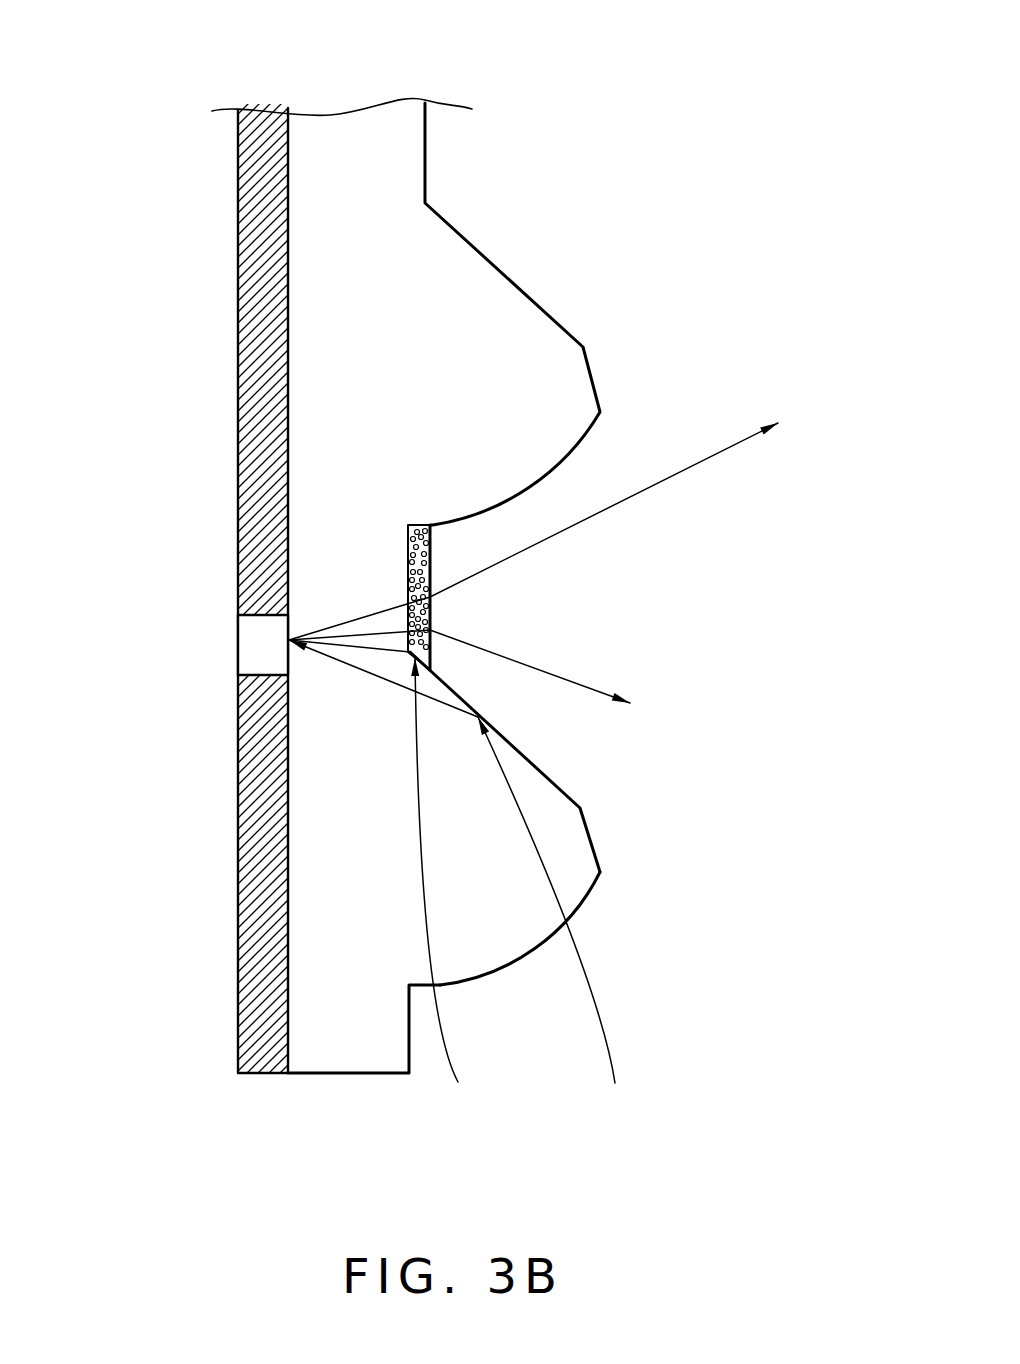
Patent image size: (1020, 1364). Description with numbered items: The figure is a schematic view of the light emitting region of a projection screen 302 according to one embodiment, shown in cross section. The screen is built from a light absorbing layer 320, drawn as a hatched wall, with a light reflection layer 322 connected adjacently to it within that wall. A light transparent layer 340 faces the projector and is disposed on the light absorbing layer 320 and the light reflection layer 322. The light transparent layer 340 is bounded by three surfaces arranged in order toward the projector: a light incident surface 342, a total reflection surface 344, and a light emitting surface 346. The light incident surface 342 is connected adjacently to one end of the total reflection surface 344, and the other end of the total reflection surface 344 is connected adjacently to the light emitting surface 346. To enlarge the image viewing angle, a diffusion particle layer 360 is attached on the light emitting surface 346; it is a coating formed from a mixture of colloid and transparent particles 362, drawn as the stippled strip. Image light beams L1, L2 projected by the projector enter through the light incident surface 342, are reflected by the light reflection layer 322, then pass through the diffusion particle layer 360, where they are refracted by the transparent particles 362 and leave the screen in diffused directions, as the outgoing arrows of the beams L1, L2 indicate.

The projection screen 302 is at (173, 68).
The light absorbing layer 320 is at (253, 1073).
The light reflection layer 322 is at (247, 647).
The light transparent layer 340 is at (365, 1073).
The light incident surface 342 is at (582, 903).
The total reflection surface 344 is at (555, 780).
The light emitting surface 346 is at (410, 563).
The diffusion particle layer 360 is at (433, 565).
The transparent particles 362 is at (433, 610).
The image light beam L1 is at (712, 460).
The image light beam L2 is at (570, 680).